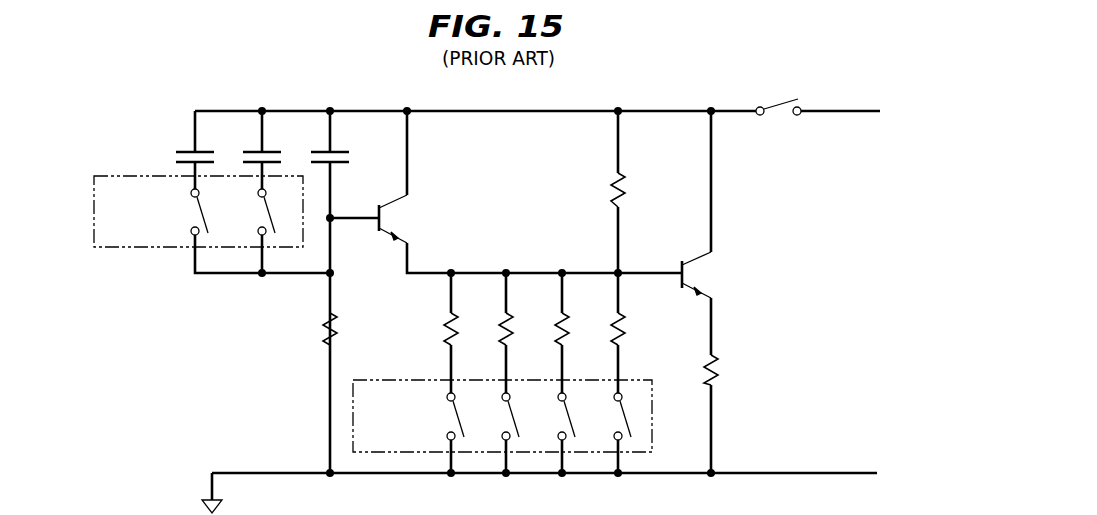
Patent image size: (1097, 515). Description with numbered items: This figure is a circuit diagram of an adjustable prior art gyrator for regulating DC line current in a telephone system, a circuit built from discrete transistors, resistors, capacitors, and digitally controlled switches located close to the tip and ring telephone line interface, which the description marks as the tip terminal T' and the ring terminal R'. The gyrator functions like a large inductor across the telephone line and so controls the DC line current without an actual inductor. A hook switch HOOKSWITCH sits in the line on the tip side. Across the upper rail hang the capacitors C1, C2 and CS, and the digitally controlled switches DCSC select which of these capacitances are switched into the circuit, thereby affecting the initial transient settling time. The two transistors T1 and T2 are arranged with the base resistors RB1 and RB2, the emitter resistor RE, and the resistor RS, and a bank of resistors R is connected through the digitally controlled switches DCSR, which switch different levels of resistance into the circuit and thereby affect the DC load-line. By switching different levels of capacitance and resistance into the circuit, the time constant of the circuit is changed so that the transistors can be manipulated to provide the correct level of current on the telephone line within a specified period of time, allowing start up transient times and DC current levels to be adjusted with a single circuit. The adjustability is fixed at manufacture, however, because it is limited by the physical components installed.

The capacitor C1 is at (190, 146).
The capacitor C2 is at (258, 146).
The capacitor CS is at (325, 146).
The digitally controlled switches DCS_C DCSC is at (198, 211).
The digitally controlled switches DCS_R DCSR is at (502, 416).
The transistor T1 is at (710, 275).
The transistor T2 is at (406, 219).
The base resistor RB1 is at (638, 195).
The base resistor RB2 is at (638, 333).
The resistor RS is at (346, 329).
The resistors R is at (497, 329).
The emitter resistor RE is at (726, 371).
The hook switch HOOKSWITCH is at (779, 94).
The tip terminal T' is at (871, 98).
The ring terminal R' is at (868, 460).